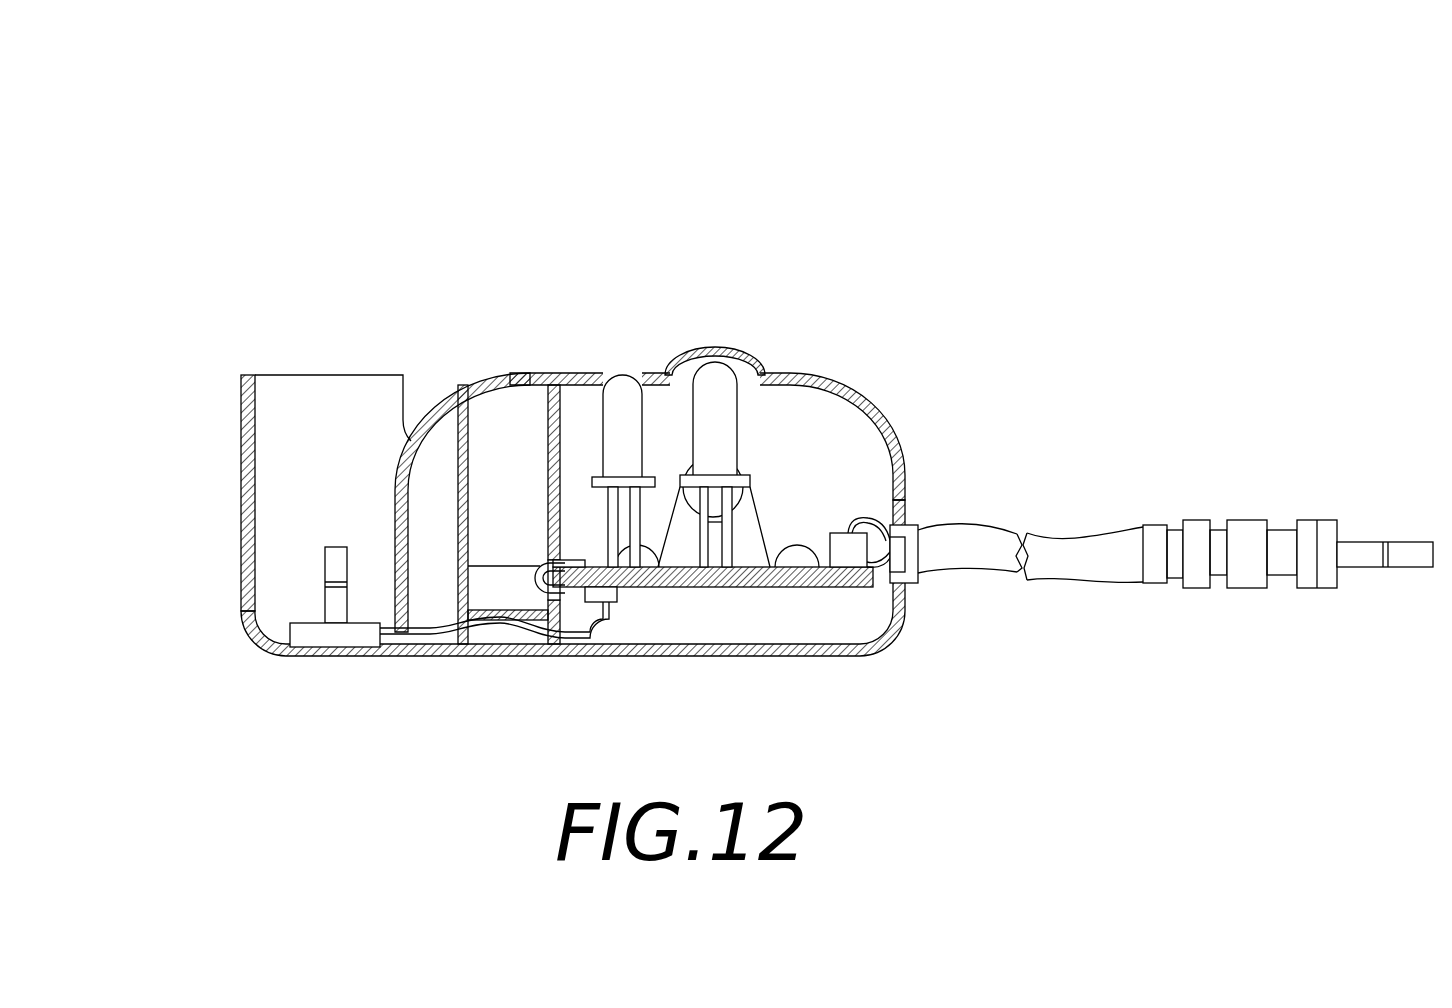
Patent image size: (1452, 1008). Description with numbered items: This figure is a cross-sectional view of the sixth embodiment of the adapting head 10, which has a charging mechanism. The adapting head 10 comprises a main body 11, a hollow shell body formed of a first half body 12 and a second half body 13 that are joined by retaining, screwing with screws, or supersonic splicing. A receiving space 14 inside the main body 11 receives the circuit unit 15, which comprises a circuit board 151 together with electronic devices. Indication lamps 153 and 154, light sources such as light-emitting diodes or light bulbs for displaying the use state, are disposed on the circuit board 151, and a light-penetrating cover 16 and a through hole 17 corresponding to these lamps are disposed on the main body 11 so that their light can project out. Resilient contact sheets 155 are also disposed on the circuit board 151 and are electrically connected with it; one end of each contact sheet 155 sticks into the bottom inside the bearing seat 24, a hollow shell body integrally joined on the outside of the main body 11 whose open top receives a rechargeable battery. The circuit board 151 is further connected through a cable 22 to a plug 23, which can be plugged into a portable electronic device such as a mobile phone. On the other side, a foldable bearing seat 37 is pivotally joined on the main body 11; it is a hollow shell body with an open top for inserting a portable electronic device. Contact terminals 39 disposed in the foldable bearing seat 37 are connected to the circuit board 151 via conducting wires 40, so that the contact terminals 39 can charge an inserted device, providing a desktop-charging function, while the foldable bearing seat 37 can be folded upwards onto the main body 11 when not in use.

The adapting head 10 is at (779, 430).
The main body 11 is at (579, 478).
The first half body 12 is at (895, 442).
The second half body 13 is at (888, 648).
The receiving space 14 is at (772, 622).
The circuit unit 15 is at (676, 470).
The light-penetrating cover 16 is at (693, 350).
The through hole 17 is at (620, 442).
The cable 22 is at (1068, 553).
The plug 23 is at (1397, 552).
The bearing seat 24 is at (492, 477).
The foldable bearing seat 37 is at (243, 563).
The contact terminal 39 is at (330, 568).
The conducting wire 40 is at (430, 653).
The circuit board 151 is at (668, 587).
The indication lamp 153 is at (717, 380).
The indication lamp 154 is at (533, 373).
The resilient contact sheet 155 is at (537, 595).